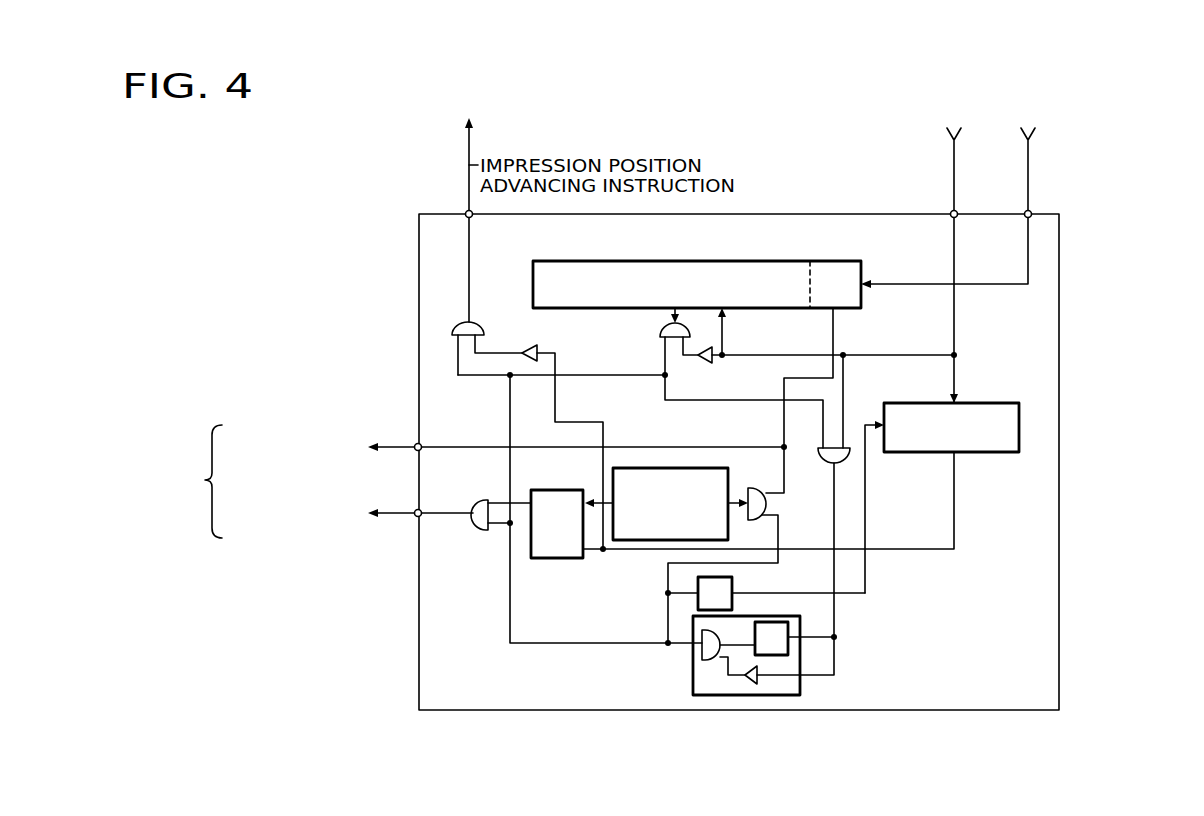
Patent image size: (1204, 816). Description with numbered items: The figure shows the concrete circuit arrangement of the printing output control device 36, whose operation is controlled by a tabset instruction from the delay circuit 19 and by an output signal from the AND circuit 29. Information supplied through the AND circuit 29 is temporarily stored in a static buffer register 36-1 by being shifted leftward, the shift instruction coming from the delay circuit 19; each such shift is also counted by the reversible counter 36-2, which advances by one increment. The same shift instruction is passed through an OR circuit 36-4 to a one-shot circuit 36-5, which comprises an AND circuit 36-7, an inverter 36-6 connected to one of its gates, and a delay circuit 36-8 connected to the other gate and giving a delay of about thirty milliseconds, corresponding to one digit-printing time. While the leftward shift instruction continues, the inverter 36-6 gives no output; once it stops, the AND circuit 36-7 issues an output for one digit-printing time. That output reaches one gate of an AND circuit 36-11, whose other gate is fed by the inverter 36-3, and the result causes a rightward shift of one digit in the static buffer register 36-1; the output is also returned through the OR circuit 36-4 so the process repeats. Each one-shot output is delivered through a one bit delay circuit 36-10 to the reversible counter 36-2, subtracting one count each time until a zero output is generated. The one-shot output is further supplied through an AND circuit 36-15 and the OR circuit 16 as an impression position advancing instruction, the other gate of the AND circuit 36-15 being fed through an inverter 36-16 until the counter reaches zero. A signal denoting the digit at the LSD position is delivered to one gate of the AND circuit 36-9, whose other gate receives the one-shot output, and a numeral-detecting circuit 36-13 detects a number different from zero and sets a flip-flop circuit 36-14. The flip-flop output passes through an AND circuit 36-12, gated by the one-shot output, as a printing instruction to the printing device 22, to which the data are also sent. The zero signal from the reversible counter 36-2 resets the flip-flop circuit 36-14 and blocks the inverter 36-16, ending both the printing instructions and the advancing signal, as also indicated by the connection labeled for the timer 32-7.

The printing output control device 36 is at (1059, 583).
The static buffer register 36-1 is at (698, 260).
The reversible counter 36-2 is at (992, 402).
The inverter 36-3 is at (707, 363).
The OR circuit 36-4 is at (820, 461).
The one-shot circuit 36-5 is at (800, 695).
The inverter 36-6 is at (749, 686).
The AND circuit 36-7 is at (701, 655).
The delay circuit 36-8 is at (790, 626).
The AND circuit 36-9 is at (755, 489).
The one bit delay circuit 36-10 is at (732, 583).
The AND circuit 36-11 is at (660, 330).
The AND circuit 36-12 is at (475, 530).
The numeral-detecting circuit 36-13 is at (613, 468).
The flip-flop circuit 36-14 is at (557, 558).
The AND circuit 36-15 is at (478, 324).
The inverter 36-16 is at (529, 350).
The OR circuit 16 is at (518, 201).
The timer 32-7 is at (509, 111).
The delay circuit 19 is at (883, 241).
The AND circuit 29 is at (1017, 184).
The printing device 22 is at (427, 481).